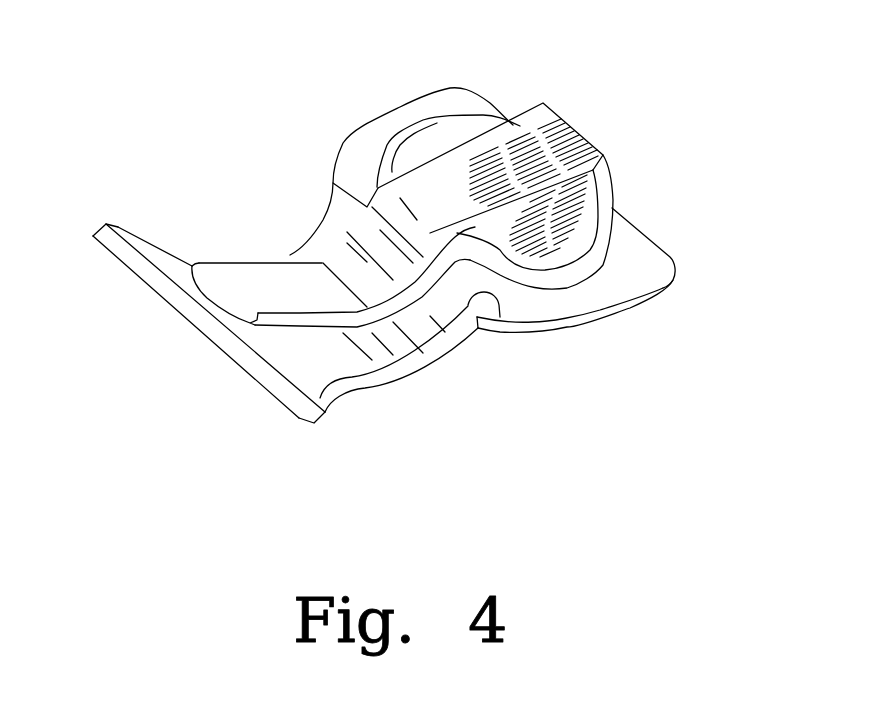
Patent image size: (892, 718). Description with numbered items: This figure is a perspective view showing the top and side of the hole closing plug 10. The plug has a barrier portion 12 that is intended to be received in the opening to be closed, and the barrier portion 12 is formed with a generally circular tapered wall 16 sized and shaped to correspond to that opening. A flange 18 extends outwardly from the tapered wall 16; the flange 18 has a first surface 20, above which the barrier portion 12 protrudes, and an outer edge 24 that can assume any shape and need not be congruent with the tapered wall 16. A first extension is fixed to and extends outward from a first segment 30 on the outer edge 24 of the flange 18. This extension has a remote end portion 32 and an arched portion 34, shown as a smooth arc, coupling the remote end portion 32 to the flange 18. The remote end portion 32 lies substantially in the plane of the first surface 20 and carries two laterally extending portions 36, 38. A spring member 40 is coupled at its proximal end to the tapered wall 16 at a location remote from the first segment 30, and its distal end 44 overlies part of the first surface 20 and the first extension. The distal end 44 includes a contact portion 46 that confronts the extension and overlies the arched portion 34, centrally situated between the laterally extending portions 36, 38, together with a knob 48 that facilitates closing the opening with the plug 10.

The hole closing plug 10 is at (670, 92).
The barrier portion 12 is at (588, 220).
The tapered wall 16 is at (597, 257).
The flange 18 is at (456, 100).
The first surface 20 is at (628, 271).
The outer edge 24 is at (595, 311).
The first segment 30 is at (499, 315).
The remote end portion 32 is at (210, 336).
The arched portion 34 is at (386, 375).
The laterally extending portion 36 is at (99, 226).
The laterally extending portion 38 is at (305, 422).
The spring member 40 is at (556, 140).
The distal end 44 is at (259, 283).
The contact portion 46 is at (336, 258).
The knob 48 is at (205, 290).